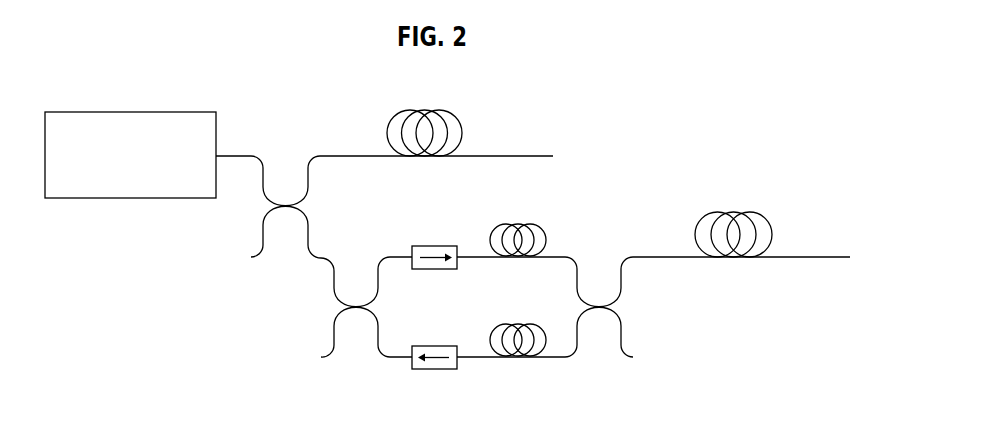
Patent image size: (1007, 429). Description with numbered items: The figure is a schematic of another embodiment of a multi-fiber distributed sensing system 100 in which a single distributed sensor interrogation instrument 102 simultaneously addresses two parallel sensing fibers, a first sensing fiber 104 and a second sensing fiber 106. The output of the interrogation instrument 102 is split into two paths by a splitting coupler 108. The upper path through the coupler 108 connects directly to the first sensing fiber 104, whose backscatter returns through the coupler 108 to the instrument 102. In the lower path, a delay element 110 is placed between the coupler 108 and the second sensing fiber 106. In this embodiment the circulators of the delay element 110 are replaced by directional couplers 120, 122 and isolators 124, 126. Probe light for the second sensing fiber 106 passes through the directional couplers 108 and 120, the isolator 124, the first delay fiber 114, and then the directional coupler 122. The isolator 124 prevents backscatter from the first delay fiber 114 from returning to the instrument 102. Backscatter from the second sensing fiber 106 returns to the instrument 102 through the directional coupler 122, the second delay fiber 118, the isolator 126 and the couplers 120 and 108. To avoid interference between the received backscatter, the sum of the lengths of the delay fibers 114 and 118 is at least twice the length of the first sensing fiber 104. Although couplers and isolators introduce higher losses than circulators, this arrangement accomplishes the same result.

The multi-fiber distributed sensing system 100 is at (650, 105).
The distributed sensor interrogation instrument 102 is at (120, 112).
The first sensing fiber 104 is at (424, 111).
The second sensing fiber 106 is at (733, 213).
The splitting coupler 108 is at (285, 182).
The delay element 110 is at (360, 379).
The first delay fiber 114 is at (518, 224).
The second delay fiber 118 is at (518, 324).
The directional coupler 120 is at (355, 279).
The directional coupler 122 is at (599, 331).
The isolator 124 is at (440, 246).
The isolator 126 is at (437, 370).